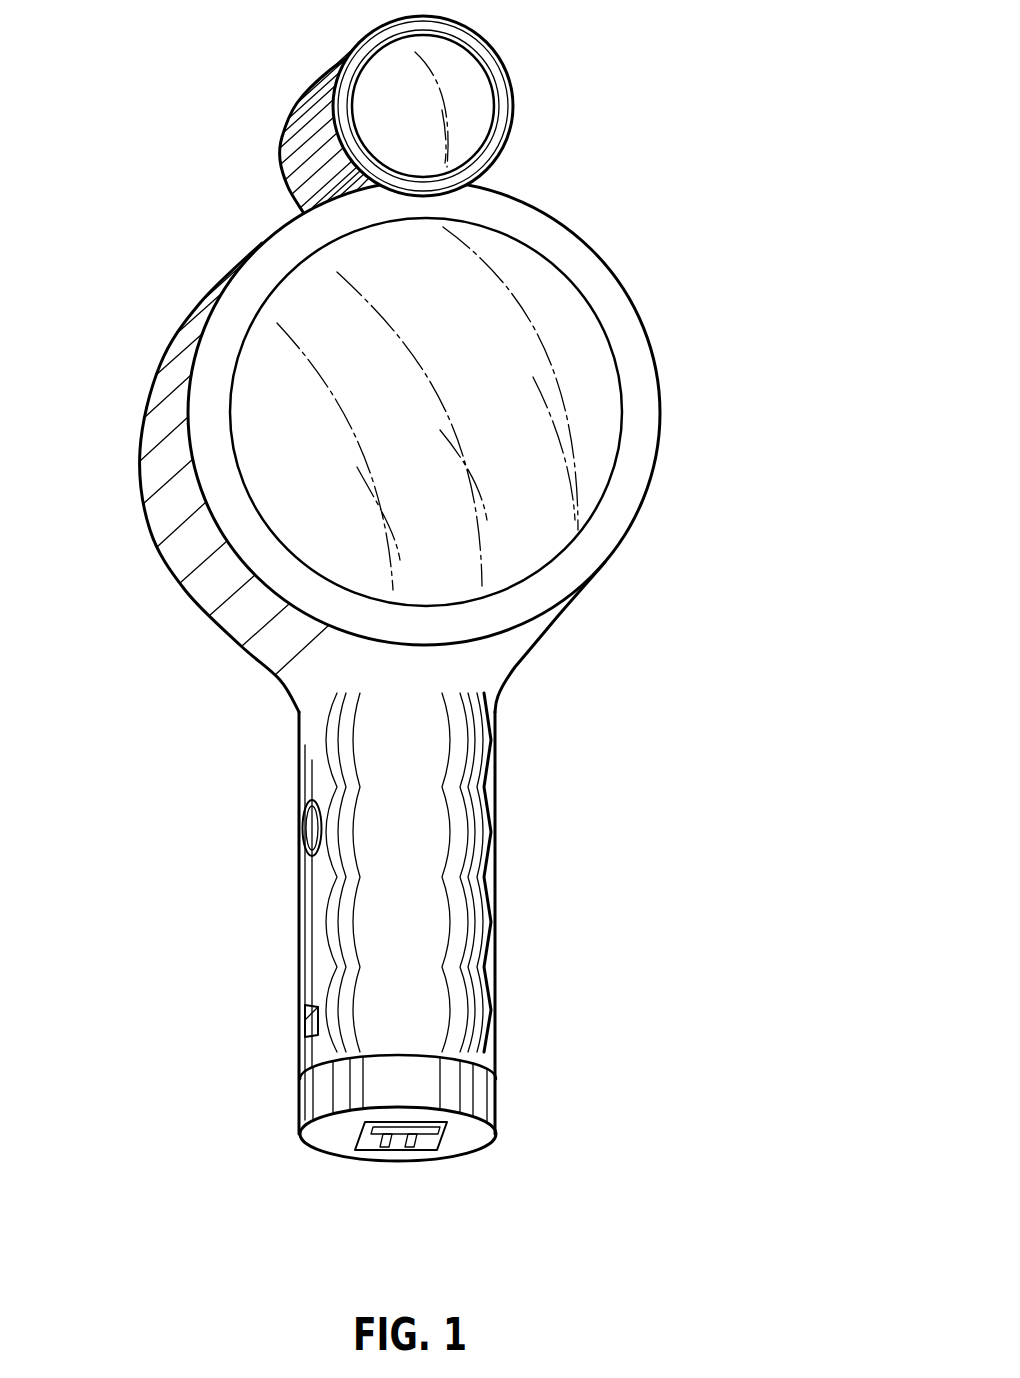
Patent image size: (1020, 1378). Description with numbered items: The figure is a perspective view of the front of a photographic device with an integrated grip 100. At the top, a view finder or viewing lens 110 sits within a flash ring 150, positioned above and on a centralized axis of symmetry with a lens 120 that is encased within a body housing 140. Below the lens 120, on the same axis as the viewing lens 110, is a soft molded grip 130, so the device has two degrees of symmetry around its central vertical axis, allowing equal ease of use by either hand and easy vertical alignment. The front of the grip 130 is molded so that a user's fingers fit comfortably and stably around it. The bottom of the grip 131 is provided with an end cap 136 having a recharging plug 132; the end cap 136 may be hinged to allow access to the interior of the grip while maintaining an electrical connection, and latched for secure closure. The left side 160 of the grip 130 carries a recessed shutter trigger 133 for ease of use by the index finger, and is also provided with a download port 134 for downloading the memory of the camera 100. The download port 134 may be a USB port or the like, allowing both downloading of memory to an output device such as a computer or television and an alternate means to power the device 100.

The photographic device with an integrated grip 100 is at (453, 630).
The viewing lens 110 is at (467, 85).
The lens 120 is at (330, 488).
The soft molded grip 130 is at (454, 969).
The bottom of the grip 131 is at (477, 1133).
The recharging plug 132 is at (397, 1133).
The recessed shutter trigger 133 is at (307, 828).
The download port 134 is at (305, 1018).
The end cap 136 is at (313, 1097).
The body housing 140 is at (230, 312).
The flash ring 150 is at (503, 132).
The left side of the grip 160 is at (313, 762).